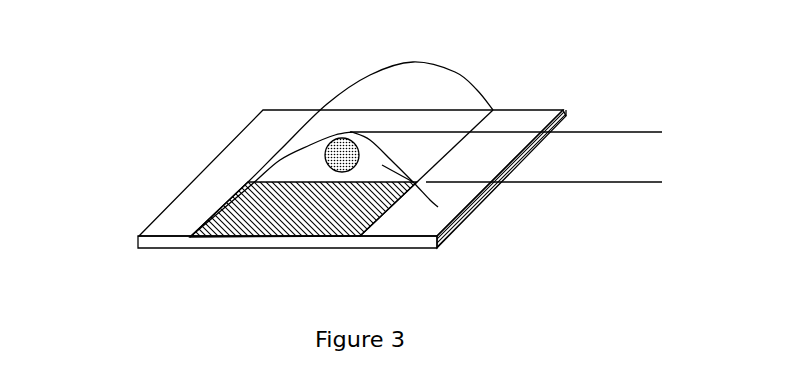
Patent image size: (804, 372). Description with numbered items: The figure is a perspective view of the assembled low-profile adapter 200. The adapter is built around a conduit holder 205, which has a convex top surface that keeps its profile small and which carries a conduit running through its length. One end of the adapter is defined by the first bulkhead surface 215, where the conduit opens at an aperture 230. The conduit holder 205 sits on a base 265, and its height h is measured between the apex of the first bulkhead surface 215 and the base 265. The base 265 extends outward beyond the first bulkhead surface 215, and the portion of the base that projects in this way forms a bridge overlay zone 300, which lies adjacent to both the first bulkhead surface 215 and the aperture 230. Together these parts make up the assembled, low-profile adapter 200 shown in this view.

The low-profile adapter 200 is at (166, 58).
The conduit holder 205 is at (327, 104).
The first bulkhead surface 215 is at (438, 207).
The aperture 230 is at (342, 158).
The base 265 is at (175, 204).
The bridge overlay zone 300 is at (265, 200).
The height h is at (509, 157).